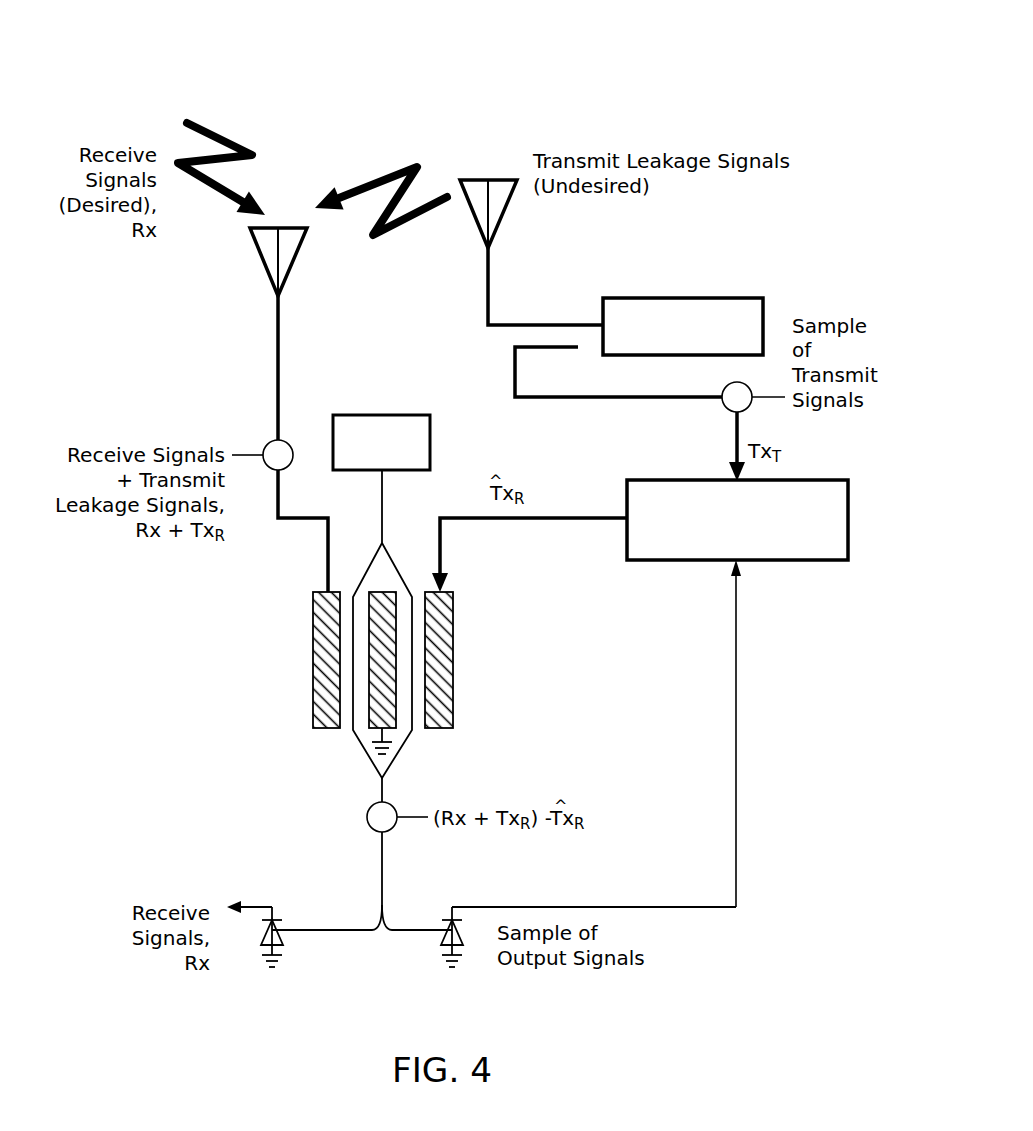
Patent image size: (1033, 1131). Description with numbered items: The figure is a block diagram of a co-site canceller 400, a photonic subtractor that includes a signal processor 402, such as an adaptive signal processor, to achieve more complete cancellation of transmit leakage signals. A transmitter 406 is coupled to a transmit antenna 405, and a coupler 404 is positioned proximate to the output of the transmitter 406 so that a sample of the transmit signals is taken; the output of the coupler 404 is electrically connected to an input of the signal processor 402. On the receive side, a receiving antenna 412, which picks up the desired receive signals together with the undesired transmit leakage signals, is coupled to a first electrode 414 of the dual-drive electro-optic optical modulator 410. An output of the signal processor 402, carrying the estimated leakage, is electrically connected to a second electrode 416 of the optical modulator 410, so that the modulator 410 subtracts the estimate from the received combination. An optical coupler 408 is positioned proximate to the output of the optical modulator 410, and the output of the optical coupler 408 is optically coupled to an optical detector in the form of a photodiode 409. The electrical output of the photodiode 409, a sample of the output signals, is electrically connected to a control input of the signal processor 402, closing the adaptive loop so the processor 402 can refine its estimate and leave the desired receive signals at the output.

The co-site canceller 400 is at (648, 76).
The signal processor 402 is at (657, 478).
The coupler 404 is at (538, 359).
The transmit antenna 405 is at (497, 178).
The transmitter 406 is at (683, 297).
The optical coupler 408 is at (395, 900).
The photodiode 409 is at (432, 965).
The optical modulator 410 is at (595, 618).
The receiving antenna 412 is at (285, 227).
The first electrode 414 is at (312, 661).
The second electrode 416 is at (453, 661).